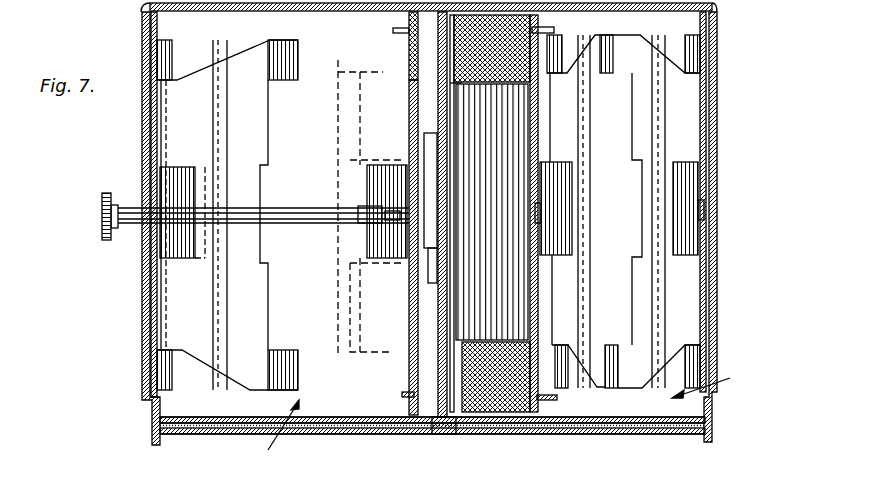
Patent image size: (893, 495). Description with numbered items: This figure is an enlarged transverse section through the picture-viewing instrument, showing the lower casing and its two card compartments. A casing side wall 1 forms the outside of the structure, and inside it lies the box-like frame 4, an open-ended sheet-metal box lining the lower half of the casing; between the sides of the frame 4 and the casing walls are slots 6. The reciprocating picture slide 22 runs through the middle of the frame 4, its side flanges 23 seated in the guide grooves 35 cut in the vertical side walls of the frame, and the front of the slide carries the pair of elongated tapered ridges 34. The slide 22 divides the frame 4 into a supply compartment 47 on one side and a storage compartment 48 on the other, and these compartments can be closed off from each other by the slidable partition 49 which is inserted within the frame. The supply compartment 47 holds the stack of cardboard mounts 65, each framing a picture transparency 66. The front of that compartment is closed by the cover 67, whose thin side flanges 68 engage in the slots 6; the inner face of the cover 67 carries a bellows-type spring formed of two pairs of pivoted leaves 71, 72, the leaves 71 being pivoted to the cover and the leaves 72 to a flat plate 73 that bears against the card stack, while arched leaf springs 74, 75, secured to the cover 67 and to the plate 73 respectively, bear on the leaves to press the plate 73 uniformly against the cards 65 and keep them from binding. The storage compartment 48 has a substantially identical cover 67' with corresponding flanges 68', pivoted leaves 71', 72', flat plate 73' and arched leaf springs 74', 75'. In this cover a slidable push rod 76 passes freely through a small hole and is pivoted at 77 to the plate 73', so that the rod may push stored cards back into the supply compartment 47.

The side wall 1 is at (336, 460).
The box-like frame 4 is at (366, 434).
The slots 6 is at (320, 432).
The picture slide 22 is at (454, 305).
The side flanges 23 is at (487, 433).
The tapered ridges 34 is at (447, 50).
The guide grooves 35 is at (470, 432).
The supply compartment 47 is at (716, 379).
The storage compartment 48 is at (274, 437).
The slidable partition 49 is at (423, 142).
The cardboard mounts 65 is at (404, 398).
The picture transparency 66 is at (418, 297).
The cover 67 is at (449, 222).
The cover 67' is at (125, 228).
The side flanges 68 is at (432, 448).
The side flanges 68' is at (432, 445).
The pivoted leaves 71 is at (667, 211).
The pivoted leaves 71' is at (361, 187).
The pivoted leaves 72 is at (623, 200).
The pivoted leaves 72' is at (227, 204).
The flat plate 73 is at (565, 35).
The flat plate 73' is at (391, 247).
The arched leaf spring 74 is at (713, 208).
The arched leaf spring 74' is at (348, 211).
The arched leaf spring 75 is at (574, 208).
The arched leaf spring 75' is at (182, 194).
The push rod 76 is at (118, 226).
The pivot 77 is at (386, 218).